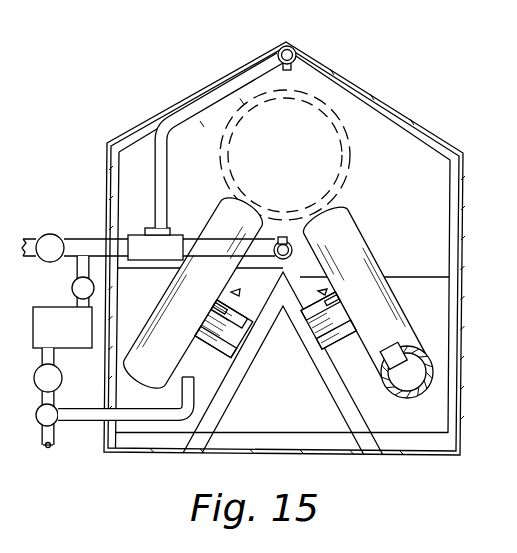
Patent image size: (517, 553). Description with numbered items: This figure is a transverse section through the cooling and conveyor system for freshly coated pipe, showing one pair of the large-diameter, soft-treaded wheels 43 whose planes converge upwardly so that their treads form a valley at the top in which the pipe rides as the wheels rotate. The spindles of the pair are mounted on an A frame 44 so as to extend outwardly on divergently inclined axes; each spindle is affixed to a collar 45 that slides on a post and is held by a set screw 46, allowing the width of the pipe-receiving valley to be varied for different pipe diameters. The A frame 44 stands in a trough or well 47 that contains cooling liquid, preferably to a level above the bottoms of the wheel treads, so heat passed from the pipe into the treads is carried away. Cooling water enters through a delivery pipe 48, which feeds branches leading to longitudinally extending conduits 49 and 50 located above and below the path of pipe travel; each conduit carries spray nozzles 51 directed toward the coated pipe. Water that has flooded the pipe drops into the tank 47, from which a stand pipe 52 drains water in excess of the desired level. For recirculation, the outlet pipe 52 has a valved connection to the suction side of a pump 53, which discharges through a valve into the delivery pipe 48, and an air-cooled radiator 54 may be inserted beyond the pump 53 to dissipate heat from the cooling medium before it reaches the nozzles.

The wheels 43 is at (162, 322).
The A frame 44 is at (313, 364).
The collar 45 is at (210, 340).
The set screw 46 is at (241, 291).
The trough or well 47 is at (461, 425).
The delivery pipe 48 is at (97, 239).
The conduit 49 is at (294, 48).
The conduit 50 is at (289, 242).
The spray nozzles 51 is at (290, 70).
The stand pipe 52 is at (193, 393).
The pump 53 is at (63, 381).
The air-cooled radiator 54 is at (54, 307).